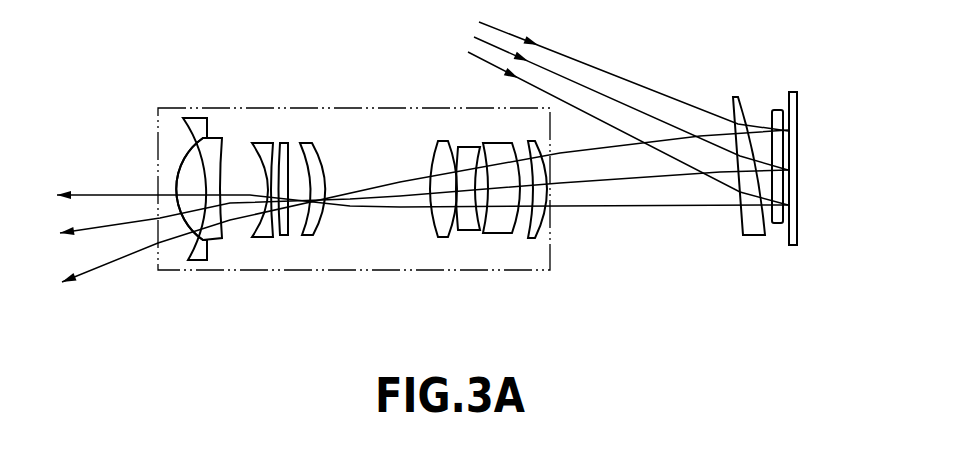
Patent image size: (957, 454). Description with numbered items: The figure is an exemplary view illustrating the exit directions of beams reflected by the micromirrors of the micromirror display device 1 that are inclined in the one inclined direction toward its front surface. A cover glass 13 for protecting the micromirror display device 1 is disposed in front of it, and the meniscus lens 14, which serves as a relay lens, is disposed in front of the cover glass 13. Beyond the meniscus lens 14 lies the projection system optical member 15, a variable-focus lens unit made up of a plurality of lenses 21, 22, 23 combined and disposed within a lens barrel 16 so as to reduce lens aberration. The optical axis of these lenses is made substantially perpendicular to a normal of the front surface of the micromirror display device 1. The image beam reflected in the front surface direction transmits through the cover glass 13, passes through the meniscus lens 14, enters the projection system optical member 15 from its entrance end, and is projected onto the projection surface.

The micromirror display device 1 is at (798, 150).
The cover glass 13 is at (778, 110).
The meniscus lens 14 is at (741, 98).
The projection system optical member 15 is at (284, 297).
The lens barrel 16 is at (378, 107).
The lens 21 is at (470, 231).
The lens 22 is at (320, 147).
The lens 23 is at (198, 122).